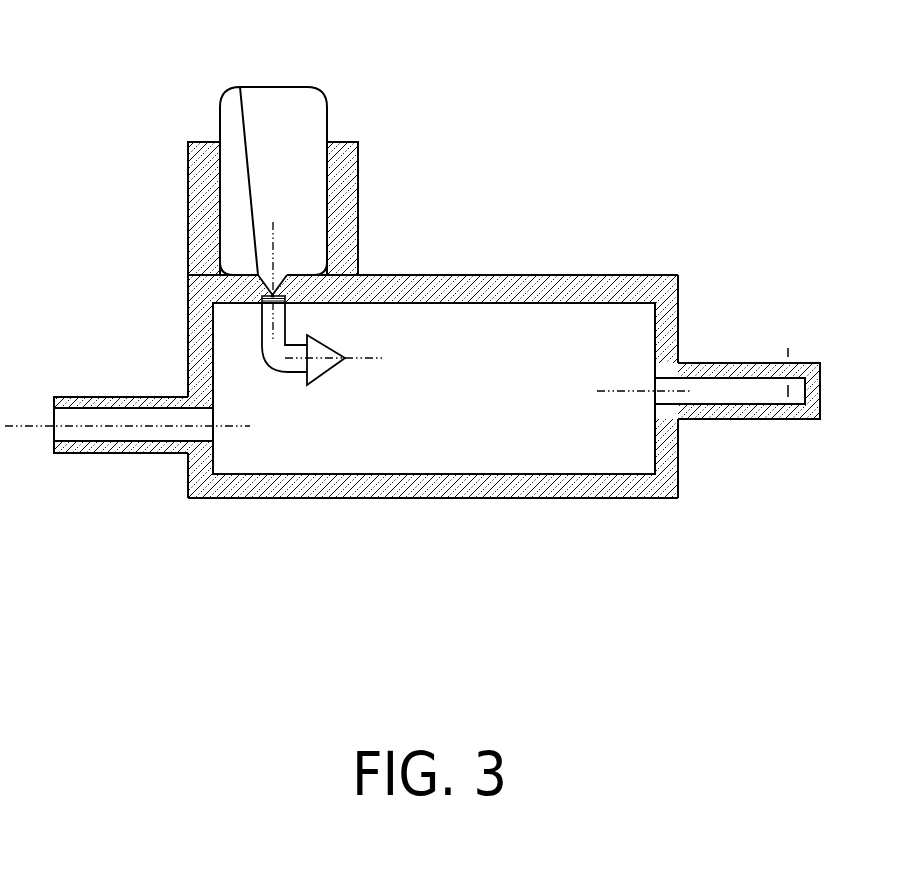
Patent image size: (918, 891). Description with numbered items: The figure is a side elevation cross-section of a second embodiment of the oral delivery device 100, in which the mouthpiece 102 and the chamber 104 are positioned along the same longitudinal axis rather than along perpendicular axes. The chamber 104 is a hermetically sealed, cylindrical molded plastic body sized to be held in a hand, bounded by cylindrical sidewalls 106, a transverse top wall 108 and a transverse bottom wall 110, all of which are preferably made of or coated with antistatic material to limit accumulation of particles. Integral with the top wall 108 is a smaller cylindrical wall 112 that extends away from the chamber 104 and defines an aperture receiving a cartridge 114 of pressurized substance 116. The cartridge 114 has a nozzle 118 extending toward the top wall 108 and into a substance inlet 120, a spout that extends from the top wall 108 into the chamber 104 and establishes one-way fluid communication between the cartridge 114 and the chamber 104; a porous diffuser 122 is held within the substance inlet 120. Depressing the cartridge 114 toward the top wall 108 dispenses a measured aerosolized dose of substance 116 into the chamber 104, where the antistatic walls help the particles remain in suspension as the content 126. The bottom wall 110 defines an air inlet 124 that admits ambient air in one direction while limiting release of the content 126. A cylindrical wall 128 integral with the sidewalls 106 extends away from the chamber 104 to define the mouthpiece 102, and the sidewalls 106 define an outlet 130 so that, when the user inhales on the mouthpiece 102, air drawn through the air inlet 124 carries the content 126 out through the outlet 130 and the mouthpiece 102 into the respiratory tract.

The oral delivery device 100 is at (184, 31).
The mouthpiece 102 is at (107, 395).
The chamber 104 is at (678, 440).
The cylindrical sidewalls 106 is at (667, 317).
The transverse top wall 108 is at (422, 286).
The transverse bottom wall 110 is at (443, 497).
The cylindrical wall 112 is at (188, 203).
The cartridge 114 is at (327, 118).
The substance 116 is at (291, 191).
The nozzle 118 is at (282, 277).
The substance inlet 120 is at (262, 312).
The diffuser 122 is at (287, 318).
The air inlet 124 is at (792, 371).
The content 126 is at (442, 390).
The cylindrical wall 128 is at (105, 446).
The outlet 130 is at (214, 432).